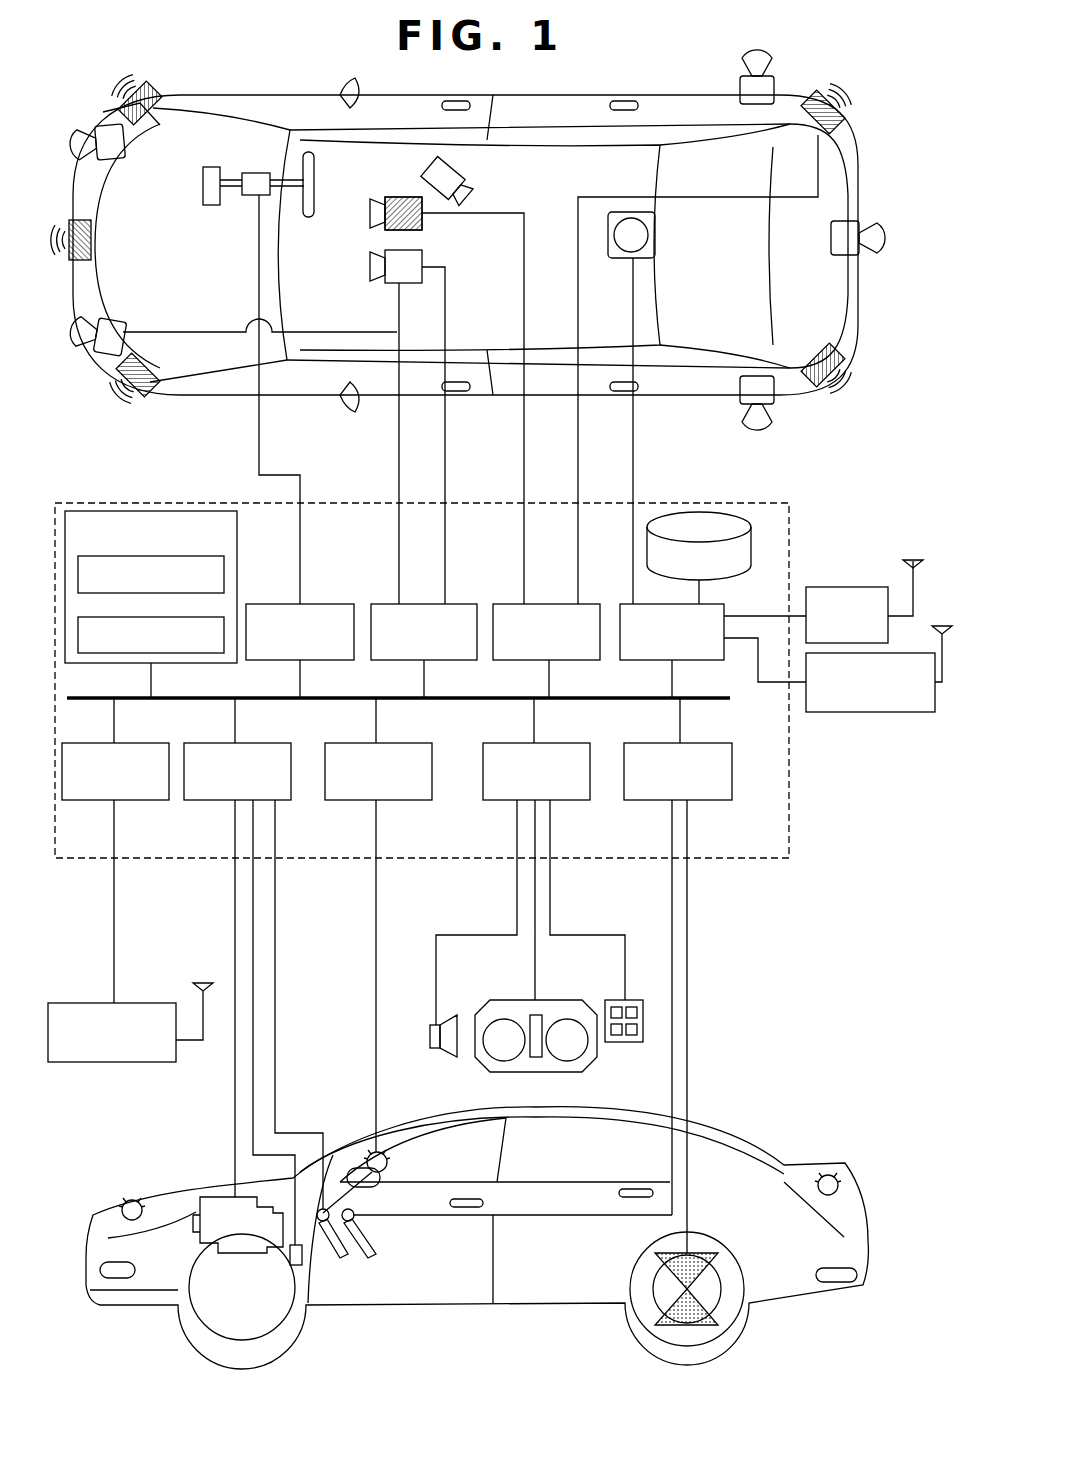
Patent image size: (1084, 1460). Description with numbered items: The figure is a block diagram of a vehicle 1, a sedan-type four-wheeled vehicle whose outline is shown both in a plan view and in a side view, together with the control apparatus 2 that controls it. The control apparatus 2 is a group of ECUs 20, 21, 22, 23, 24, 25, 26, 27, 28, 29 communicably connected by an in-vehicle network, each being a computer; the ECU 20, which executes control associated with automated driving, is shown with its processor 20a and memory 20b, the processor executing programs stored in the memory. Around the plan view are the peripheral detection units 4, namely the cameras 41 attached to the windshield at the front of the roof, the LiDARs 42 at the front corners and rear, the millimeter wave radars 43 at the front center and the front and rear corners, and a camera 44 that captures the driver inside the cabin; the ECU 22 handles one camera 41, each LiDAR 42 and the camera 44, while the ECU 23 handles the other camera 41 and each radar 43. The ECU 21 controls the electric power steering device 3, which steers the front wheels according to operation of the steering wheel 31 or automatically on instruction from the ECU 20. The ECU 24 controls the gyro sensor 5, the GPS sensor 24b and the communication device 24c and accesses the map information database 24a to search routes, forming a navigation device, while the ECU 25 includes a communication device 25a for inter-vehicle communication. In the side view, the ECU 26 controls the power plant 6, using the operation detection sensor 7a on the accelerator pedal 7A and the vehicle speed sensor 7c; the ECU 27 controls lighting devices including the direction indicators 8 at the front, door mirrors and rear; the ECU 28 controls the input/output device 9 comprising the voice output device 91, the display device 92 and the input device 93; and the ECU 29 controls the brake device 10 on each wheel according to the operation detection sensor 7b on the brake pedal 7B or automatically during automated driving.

The vehicle 1 is at (862, 155).
The vehicle control apparatus 2 is at (770, 860).
The electric power steering device 3 is at (211, 206).
The steering wheel 31 is at (310, 218).
The external sensing devices 4 is at (106, 114).
The camera 41 is at (424, 225).
The LiDAR 42 is at (122, 168).
The millimeter wave radar 43 is at (140, 120).
The camera 44 is at (476, 191).
The gyro sensor 5 is at (657, 236).
The power plant 6 is at (203, 1197).
The operation detection sensor 7a is at (335, 1188).
The operation detection sensor 7b is at (353, 1212).
The vehicle speed sensor 7c is at (298, 1266).
The accelerator pedal 7A is at (362, 1259).
The brake pedal 7B is at (378, 1251).
The direction indicators 8 is at (120, 1202).
The input/output device 9 is at (531, 1043).
The voice output device 91 is at (430, 1030).
The display device 92 is at (492, 1016).
The input device 93 is at (622, 1042).
The brake device 10 is at (700, 1330).
The ECU 20 is at (205, 511).
The processor 20a is at (224, 557).
The memory 20b is at (224, 618).
The ECU 21 is at (333, 604).
The ECU 22 is at (422, 604).
The ECU 23 is at (544, 604).
The ECU 24 is at (604, 604).
The map information database 24a is at (700, 512).
The GPS sensor 24b is at (862, 587).
The communication device 24c is at (858, 712).
The ECU 25 is at (150, 800).
The communication device 25a is at (114, 1062).
The ECU 26 is at (210, 800).
The ECU 27 is at (408, 800).
The ECU 28 is at (572, 800).
The ECU 29 is at (710, 800).